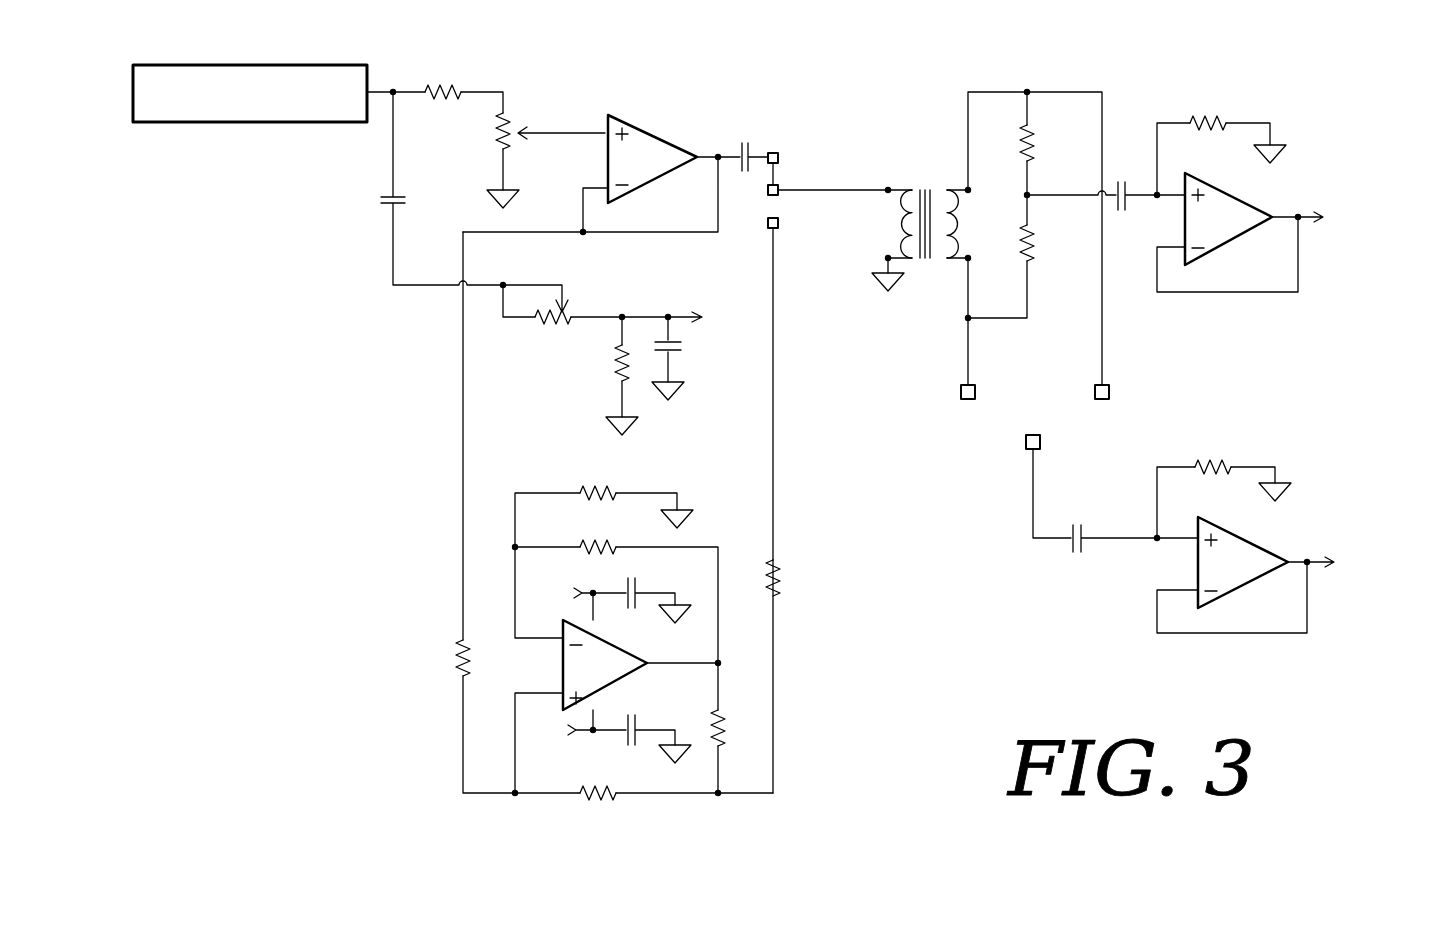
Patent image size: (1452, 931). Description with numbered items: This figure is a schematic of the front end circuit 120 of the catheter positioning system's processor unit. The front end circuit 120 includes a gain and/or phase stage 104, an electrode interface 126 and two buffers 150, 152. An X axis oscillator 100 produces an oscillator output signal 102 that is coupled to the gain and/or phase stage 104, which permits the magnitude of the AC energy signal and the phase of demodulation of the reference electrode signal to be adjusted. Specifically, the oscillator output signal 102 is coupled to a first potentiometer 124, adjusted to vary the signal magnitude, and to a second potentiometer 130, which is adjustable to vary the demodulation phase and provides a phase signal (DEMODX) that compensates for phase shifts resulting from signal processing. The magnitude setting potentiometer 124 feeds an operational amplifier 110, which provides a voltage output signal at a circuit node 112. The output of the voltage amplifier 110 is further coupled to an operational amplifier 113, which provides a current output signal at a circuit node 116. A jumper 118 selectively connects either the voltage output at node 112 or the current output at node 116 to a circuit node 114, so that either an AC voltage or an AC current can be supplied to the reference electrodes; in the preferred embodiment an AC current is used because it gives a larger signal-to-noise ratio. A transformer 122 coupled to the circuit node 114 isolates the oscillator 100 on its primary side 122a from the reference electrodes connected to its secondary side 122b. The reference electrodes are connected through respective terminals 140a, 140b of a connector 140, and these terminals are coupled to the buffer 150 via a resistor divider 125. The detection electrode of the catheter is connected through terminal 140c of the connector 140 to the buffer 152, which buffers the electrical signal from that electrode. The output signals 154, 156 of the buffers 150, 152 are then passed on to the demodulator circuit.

The X axis oscillator 100 is at (268, 65).
The oscillator output signal 102 is at (395, 88).
The gain and/or phase stage 104 is at (423, 308).
The operational amplifier 110 is at (615, 175).
The circuit node 112 is at (778, 152).
The operational amplifier 113 is at (602, 516).
The circuit node 114 is at (779, 194).
The circuit node 116 is at (777, 230).
The jumper 118 is at (783, 186).
The front end circuit 120 is at (758, 73).
The transformer 122 is at (938, 151).
The primary side 122a is at (888, 188).
The secondary side 122b is at (968, 188).
The first potentiometer 124 is at (522, 130).
The resistor divider 125 is at (1016, 198).
The electrode interface 126 is at (1035, 58).
The second potentiometer 130 is at (566, 313).
The connector 140 is at (975, 437).
The terminal 140a is at (965, 385).
The terminal 140b is at (1127, 372).
The terminal 140c is at (1028, 450).
The buffer 150 is at (1226, 190).
The buffer 152 is at (1232, 533).
The output signal 154 is at (1298, 214).
The output signal 156 is at (1292, 558).